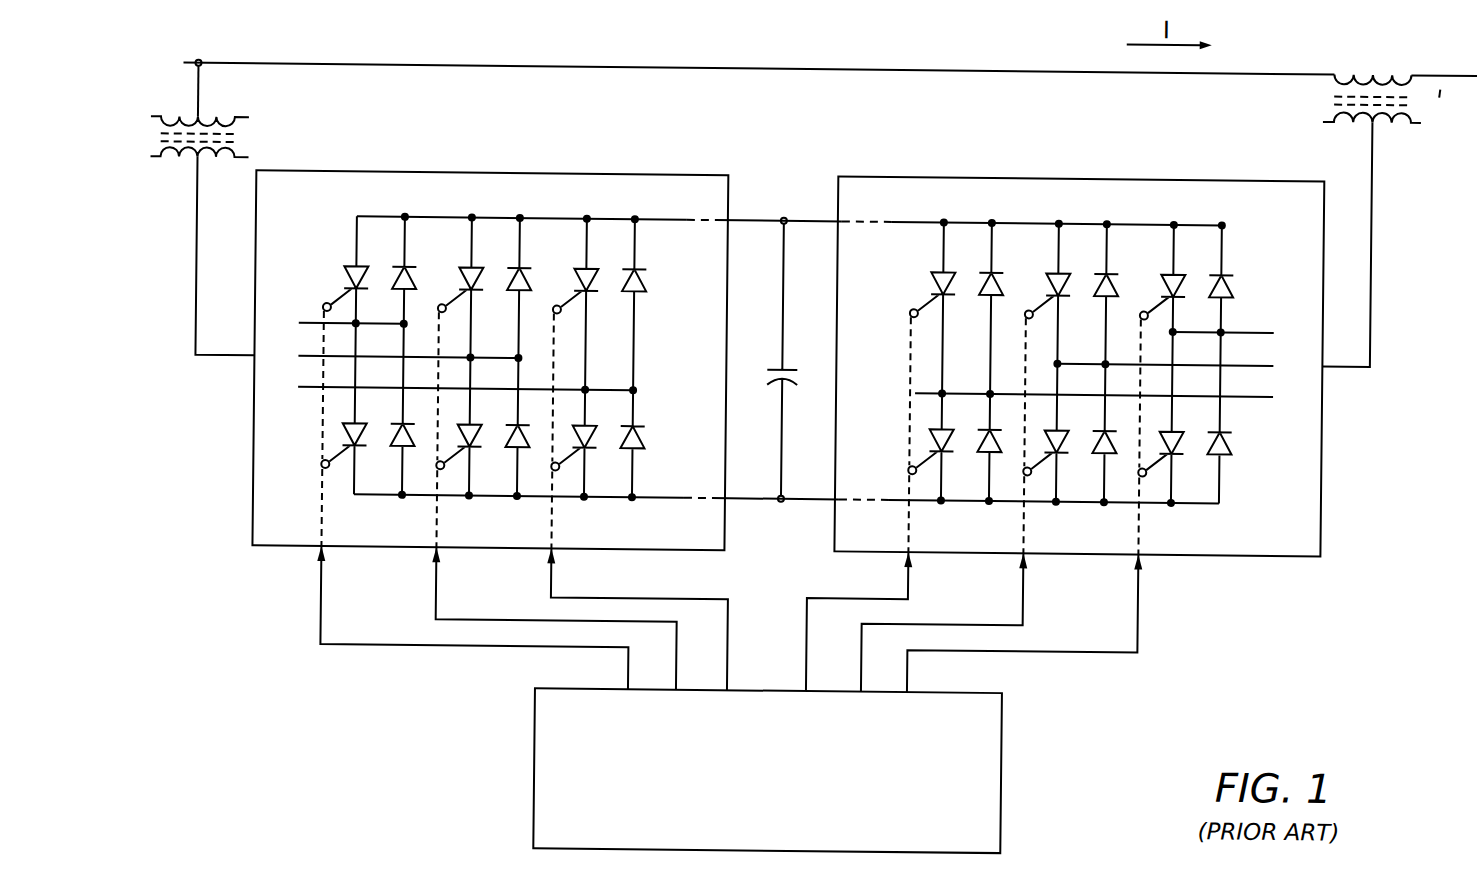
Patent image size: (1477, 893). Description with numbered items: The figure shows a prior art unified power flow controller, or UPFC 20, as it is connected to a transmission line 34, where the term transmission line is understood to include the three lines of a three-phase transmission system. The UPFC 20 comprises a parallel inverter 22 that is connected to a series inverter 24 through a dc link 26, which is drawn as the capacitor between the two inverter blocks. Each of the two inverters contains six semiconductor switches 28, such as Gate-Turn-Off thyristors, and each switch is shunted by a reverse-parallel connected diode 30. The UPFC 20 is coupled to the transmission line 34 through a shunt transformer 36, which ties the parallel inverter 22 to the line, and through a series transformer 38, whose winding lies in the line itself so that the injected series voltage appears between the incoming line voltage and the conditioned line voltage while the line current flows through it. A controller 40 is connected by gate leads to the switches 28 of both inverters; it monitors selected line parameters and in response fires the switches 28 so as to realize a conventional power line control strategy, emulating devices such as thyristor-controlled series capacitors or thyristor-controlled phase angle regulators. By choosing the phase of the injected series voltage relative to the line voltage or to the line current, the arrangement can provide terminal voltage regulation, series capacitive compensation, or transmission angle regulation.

The UPFC 20 is at (328, 50).
The parallel inverter 22 is at (525, 176).
The series inverter 24 is at (1080, 176).
The dc link 26 is at (797, 370).
The semiconductor switches 28 is at (351, 271).
The diode 30 is at (408, 271).
The transmission line 34 is at (487, 69).
The shunt transformer 36 is at (215, 123).
The series transformer 38 is at (1373, 67).
The controller 40 is at (1005, 788).